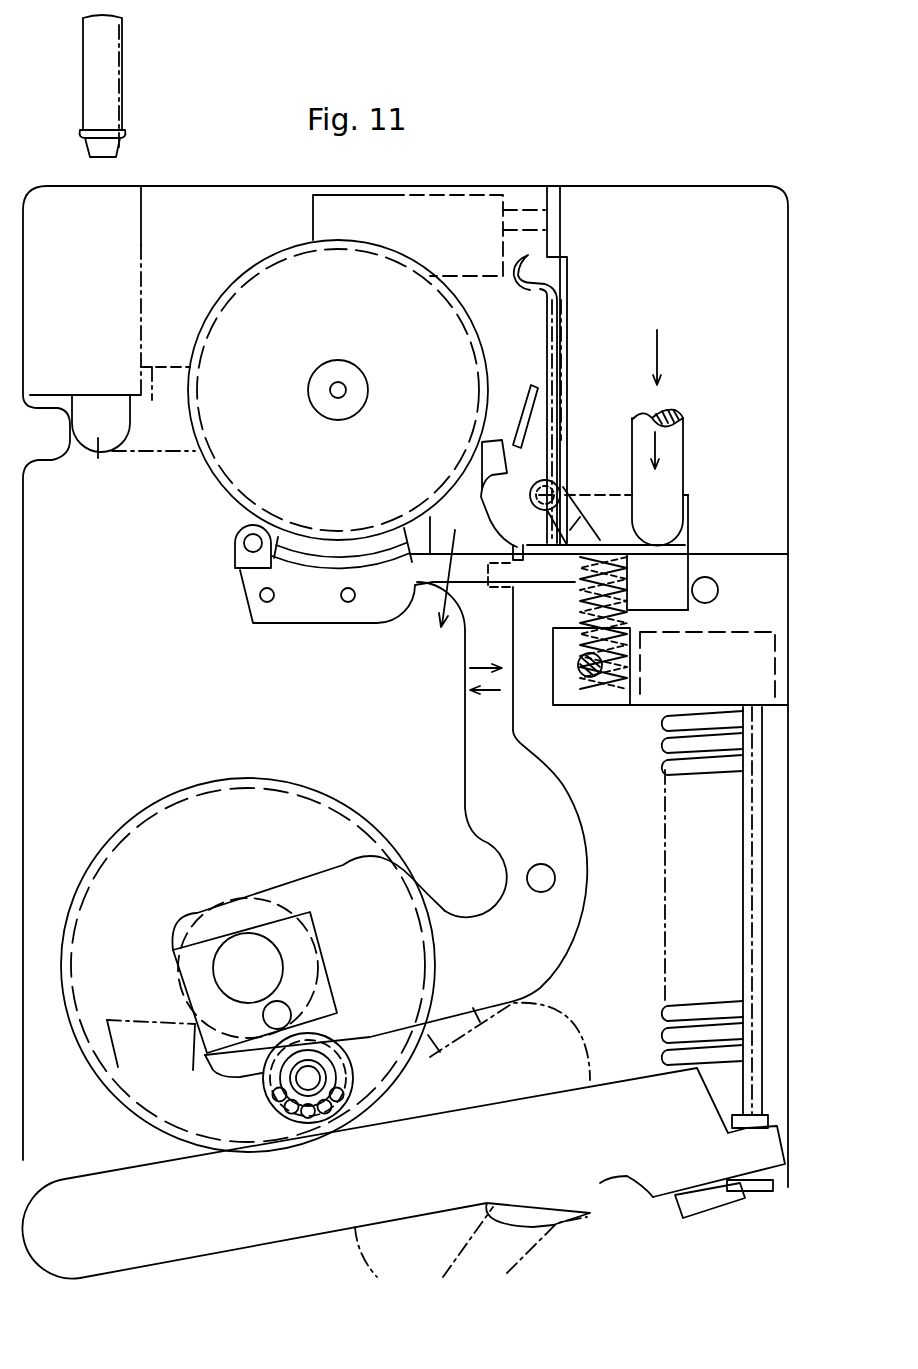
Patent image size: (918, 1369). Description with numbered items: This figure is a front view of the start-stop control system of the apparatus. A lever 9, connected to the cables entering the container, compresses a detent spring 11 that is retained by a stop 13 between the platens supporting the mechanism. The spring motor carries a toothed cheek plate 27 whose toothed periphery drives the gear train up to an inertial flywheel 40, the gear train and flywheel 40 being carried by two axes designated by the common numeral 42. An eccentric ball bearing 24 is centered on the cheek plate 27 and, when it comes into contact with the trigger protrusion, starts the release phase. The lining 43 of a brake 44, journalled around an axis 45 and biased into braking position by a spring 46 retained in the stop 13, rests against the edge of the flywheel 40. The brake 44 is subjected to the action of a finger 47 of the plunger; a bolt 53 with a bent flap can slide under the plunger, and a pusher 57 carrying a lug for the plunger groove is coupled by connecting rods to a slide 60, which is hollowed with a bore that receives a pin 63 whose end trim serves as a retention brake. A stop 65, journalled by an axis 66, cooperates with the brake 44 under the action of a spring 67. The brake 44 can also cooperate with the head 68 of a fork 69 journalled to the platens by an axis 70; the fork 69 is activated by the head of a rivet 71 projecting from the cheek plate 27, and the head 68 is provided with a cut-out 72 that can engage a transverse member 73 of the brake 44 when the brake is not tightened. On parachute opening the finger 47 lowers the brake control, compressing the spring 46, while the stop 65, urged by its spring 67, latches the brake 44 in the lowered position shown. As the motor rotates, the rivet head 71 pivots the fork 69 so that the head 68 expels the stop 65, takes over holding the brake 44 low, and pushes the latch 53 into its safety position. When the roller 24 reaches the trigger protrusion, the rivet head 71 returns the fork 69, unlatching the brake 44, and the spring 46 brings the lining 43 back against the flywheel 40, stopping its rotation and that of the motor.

The lever 9 is at (85, 1207).
The detent spring 11 is at (653, 1003).
The stop 13 is at (751, 592).
The ball bearing 24 is at (365, 1098).
The toothed cheek plate 27 is at (165, 840).
The inertial flywheel 40 is at (250, 435).
The axes 42 is at (335, 387).
The lining 43 is at (310, 548).
The brake 44 is at (313, 608).
The axis 45 is at (250, 543).
The spring 46 is at (580, 613).
The finger 47 is at (677, 457).
The bolt 53 is at (520, 403).
The pusher 57 is at (452, 213).
The slide 60 is at (97, 457).
The pin 63 is at (110, 90).
The stop 65 is at (568, 497).
The axis 66 is at (540, 478).
The spring 67 is at (563, 453).
The head 68 is at (453, 530).
The fork 69 is at (338, 897).
The axis 70 is at (543, 875).
The rivet 71 is at (270, 1015).
The cut-out 72 is at (500, 565).
The transverse member 73 is at (543, 540).